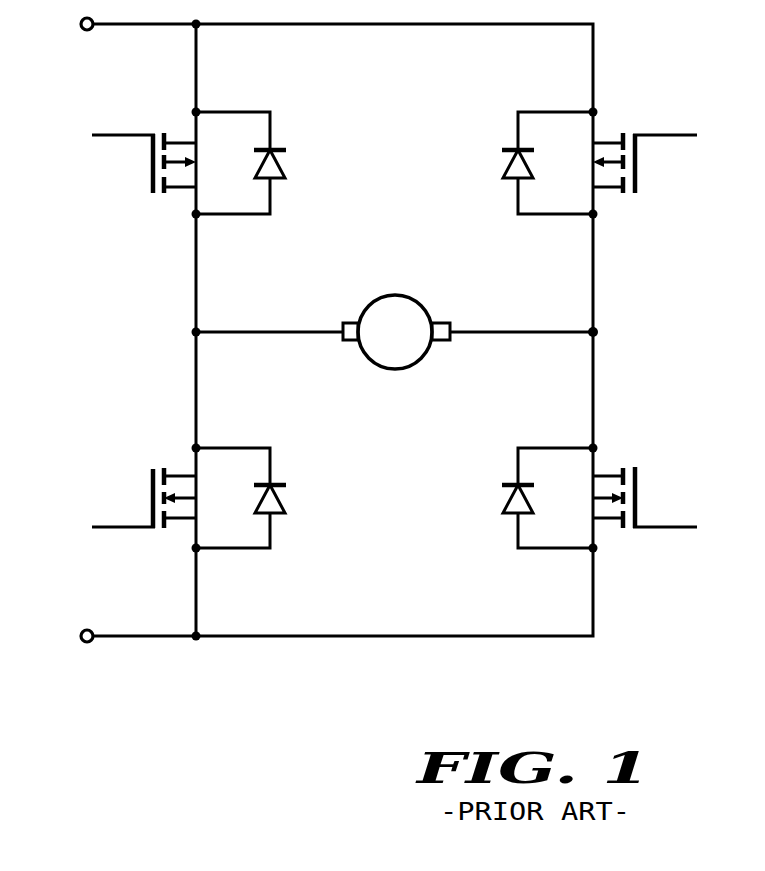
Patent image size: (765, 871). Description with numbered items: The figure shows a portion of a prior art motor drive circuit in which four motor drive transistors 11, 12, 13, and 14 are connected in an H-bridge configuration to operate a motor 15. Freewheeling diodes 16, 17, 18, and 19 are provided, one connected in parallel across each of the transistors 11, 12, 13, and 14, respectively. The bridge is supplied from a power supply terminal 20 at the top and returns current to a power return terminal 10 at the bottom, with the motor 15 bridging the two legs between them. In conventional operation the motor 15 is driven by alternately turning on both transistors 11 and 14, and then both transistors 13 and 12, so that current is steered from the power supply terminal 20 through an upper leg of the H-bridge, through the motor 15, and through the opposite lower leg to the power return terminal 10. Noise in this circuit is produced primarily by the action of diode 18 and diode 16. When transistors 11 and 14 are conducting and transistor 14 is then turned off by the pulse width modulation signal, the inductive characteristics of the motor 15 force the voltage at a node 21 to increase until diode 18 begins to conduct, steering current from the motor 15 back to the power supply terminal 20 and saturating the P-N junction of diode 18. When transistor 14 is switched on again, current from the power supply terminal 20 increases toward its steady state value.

The power return terminal 10 is at (75, 634).
The power supply terminal 20 is at (75, 25).
The motor drive transistor 11 is at (143, 174).
The motor drive transistor 12 is at (143, 488).
The motor drive transistor 13 is at (645, 175).
The motor drive transistor 14 is at (647, 486).
The motor 15 is at (396, 332).
The freewheeling diode 16 is at (287, 160).
The freewheeling diode 17 is at (287, 500).
The freewheeling diode 18 is at (503, 162).
The freewheeling diode 19 is at (503, 500).
The node 21 is at (598, 332).